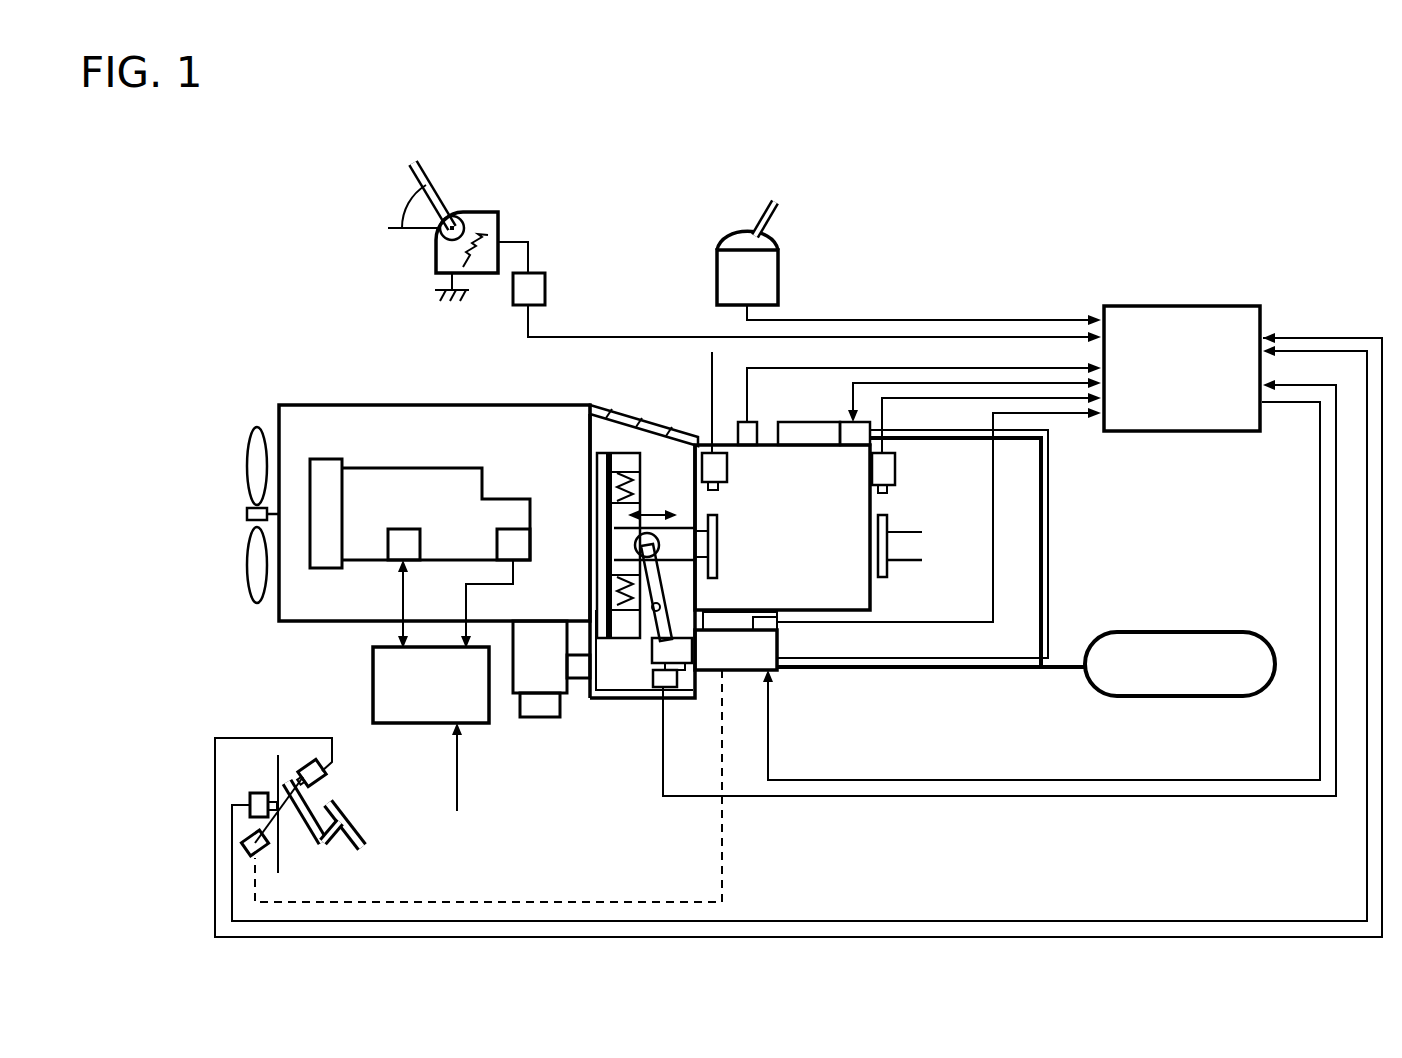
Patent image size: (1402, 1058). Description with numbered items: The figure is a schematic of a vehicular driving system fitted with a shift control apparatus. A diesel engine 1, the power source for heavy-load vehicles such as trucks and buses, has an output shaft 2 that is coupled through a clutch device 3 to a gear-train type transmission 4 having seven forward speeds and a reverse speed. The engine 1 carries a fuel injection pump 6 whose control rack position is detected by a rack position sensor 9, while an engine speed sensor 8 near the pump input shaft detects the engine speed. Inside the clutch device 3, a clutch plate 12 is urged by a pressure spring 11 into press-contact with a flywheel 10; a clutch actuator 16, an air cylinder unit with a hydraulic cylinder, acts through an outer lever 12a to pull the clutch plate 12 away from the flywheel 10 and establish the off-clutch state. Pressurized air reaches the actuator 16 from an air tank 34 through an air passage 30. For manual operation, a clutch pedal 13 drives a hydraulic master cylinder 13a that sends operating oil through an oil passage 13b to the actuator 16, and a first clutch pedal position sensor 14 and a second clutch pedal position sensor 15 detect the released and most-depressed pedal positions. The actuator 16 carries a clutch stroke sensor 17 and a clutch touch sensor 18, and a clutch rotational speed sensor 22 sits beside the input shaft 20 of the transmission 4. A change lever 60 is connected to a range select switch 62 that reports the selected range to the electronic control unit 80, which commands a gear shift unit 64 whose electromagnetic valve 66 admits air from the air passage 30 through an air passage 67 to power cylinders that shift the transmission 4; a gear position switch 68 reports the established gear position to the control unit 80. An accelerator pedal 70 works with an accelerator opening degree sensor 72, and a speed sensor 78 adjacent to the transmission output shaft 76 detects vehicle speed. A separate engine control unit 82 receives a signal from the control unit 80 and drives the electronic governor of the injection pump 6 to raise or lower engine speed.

The diesel engine 1 is at (248, 619).
The output shaft 2 is at (587, 553).
The clutch device 3 is at (598, 712).
The gear-train type transmission 4 is at (884, 590).
The fuel injection pump 6 is at (447, 468).
The engine speed sensor 8 is at (397, 553).
The rack position sensor 9 is at (507, 530).
The flywheel 10 is at (602, 453).
The pressure spring 11 is at (640, 470).
The clutch plate 12 is at (602, 490).
The outer lever 12a is at (655, 628).
The clutch pedal 13 is at (347, 820).
The hydraulic master cylinder 13a is at (262, 850).
The oil passage 13b is at (420, 900).
The first clutch pedal position sensor 14 is at (325, 768).
The second clutch pedal position sensor 15 is at (260, 793).
The clutch actuator 16 is at (760, 660).
The clutch stroke sensor 17 is at (770, 617).
The clutch touch sensor 18 is at (680, 690).
The input shaft 20 is at (676, 540).
The clutch rotational speed sensor 22 is at (722, 540).
The air passage 30 is at (885, 668).
The air tank 34 is at (1195, 632).
The change lever 60 is at (762, 216).
The range select switch 62 is at (715, 275).
The gear shift unit 64 is at (798, 447).
The electromagnetic valve 66 is at (852, 447).
The air passage 67 is at (1050, 513).
The gear position switch 68 is at (750, 450).
The accelerator pedal 70 is at (412, 168).
The accelerator opening degree sensor 72 is at (483, 210).
The output shaft 76 is at (910, 553).
The speed sensor 78 is at (896, 470).
The electronic control unit 80 is at (1112, 303).
The engine control unit 82 is at (373, 670).